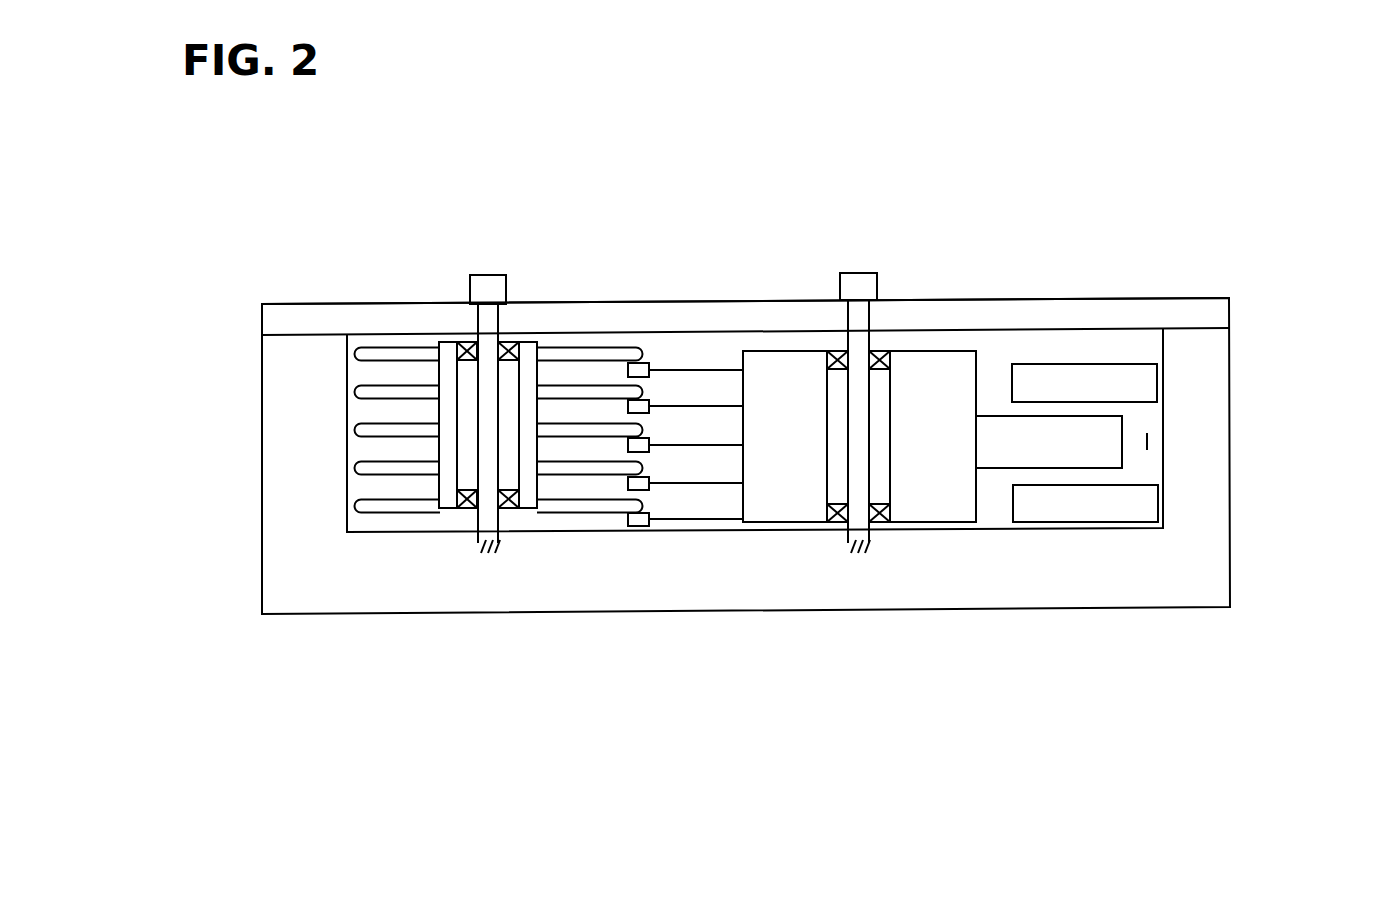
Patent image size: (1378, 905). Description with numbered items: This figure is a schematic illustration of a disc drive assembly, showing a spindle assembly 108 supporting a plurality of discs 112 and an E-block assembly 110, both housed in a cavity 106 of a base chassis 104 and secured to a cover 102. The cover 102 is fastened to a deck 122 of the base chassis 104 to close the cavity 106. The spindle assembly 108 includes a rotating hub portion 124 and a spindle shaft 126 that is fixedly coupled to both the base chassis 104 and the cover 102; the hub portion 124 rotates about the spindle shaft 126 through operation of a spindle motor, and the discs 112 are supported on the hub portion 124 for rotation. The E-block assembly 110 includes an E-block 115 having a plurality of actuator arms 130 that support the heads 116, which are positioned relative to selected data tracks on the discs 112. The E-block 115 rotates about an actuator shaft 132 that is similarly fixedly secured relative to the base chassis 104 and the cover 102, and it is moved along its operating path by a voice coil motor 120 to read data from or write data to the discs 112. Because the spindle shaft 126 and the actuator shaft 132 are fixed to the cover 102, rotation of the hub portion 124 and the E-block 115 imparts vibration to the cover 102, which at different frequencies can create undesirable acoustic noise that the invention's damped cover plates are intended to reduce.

The cover 102 is at (1205, 298).
The base chassis 104 is at (1197, 505).
The cavity 106 is at (1147, 441).
The spindle assembly 108 is at (546, 336).
The E-block assembly 110 is at (950, 345).
The discs 112 is at (358, 354).
The E-block 115 is at (961, 453).
The heads 116 is at (628, 406).
The voice coil motor 120 is at (1078, 352).
The deck 122 is at (1210, 326).
The hub portion 124 is at (529, 500).
The spindle shaft 126 is at (486, 275).
The actuator arms 130 is at (667, 406).
The actuator shaft 132 is at (858, 273).